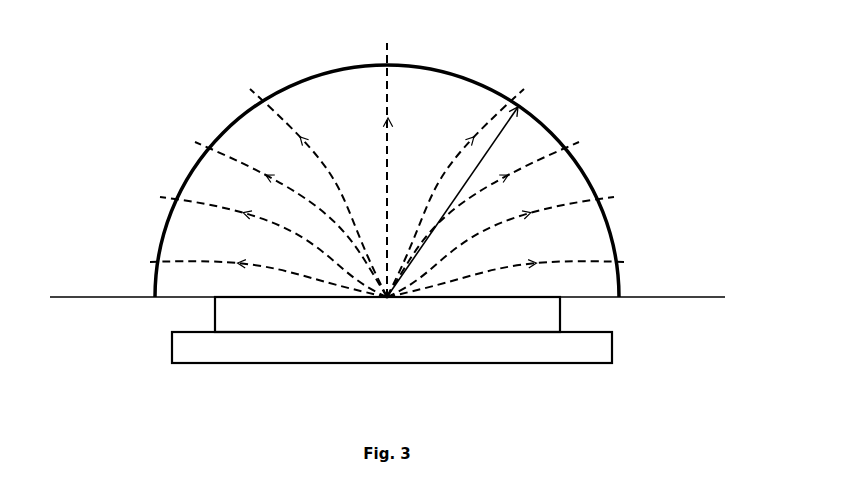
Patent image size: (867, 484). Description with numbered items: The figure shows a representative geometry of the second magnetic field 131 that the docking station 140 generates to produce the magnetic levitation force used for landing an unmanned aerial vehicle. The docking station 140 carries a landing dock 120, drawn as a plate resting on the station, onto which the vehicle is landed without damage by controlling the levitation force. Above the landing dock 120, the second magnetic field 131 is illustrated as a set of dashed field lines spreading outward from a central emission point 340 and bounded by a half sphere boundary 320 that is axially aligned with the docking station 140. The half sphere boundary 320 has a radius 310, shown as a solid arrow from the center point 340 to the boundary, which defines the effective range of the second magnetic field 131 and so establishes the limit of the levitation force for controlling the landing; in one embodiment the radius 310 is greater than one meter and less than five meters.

The landing dock 120 is at (215, 310).
The second magnetic field 131 is at (322, 162).
The docking station 140 is at (172, 350).
The radius 310 is at (510, 128).
The half sphere boundary 320 is at (590, 183).
The light emission point 340 is at (387, 300).